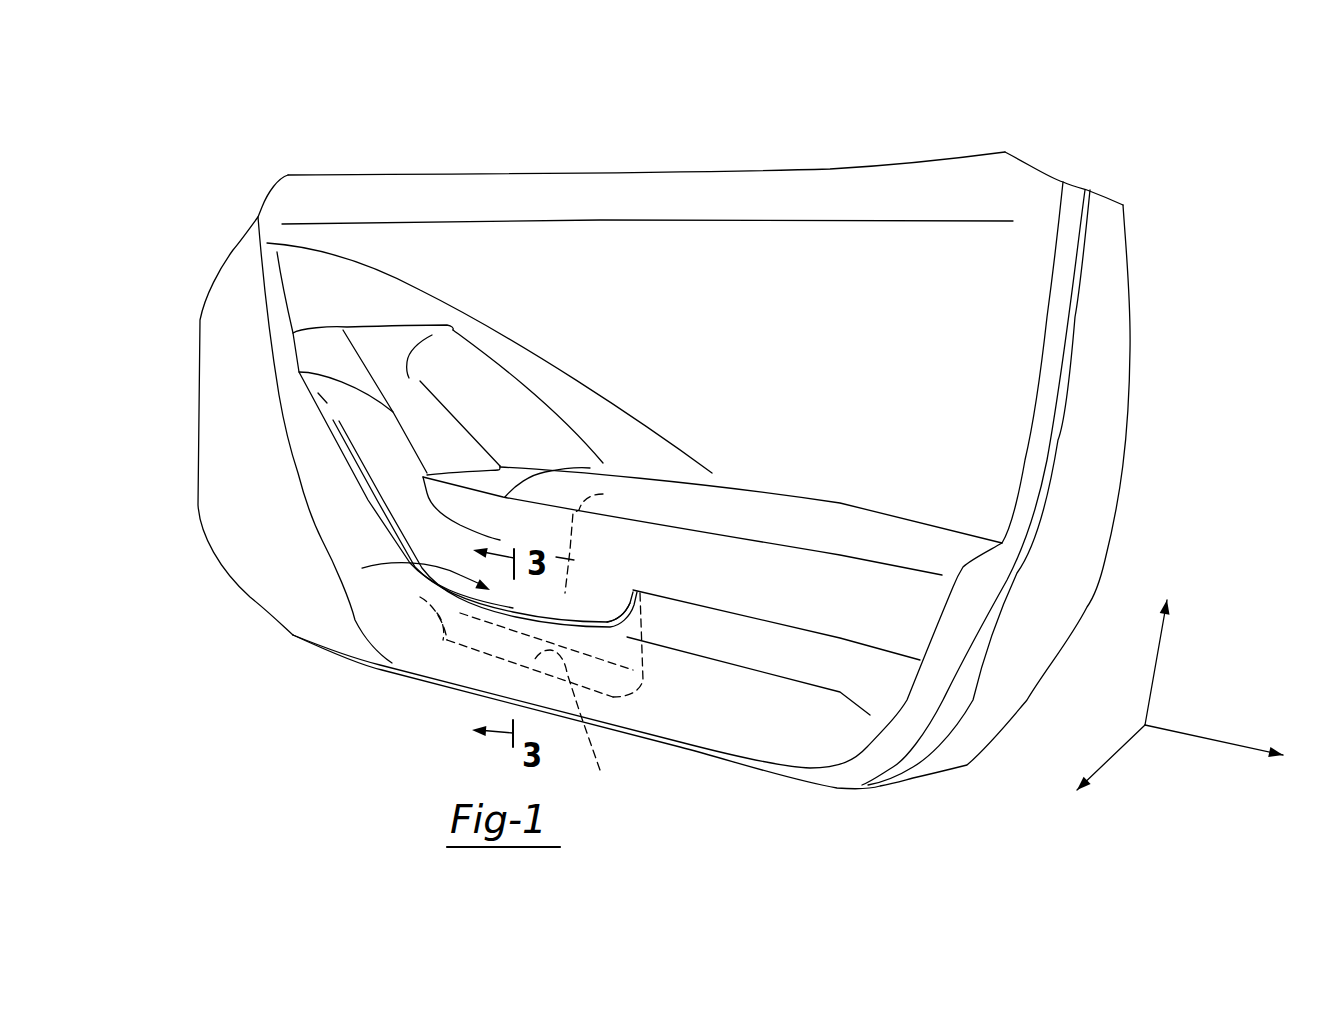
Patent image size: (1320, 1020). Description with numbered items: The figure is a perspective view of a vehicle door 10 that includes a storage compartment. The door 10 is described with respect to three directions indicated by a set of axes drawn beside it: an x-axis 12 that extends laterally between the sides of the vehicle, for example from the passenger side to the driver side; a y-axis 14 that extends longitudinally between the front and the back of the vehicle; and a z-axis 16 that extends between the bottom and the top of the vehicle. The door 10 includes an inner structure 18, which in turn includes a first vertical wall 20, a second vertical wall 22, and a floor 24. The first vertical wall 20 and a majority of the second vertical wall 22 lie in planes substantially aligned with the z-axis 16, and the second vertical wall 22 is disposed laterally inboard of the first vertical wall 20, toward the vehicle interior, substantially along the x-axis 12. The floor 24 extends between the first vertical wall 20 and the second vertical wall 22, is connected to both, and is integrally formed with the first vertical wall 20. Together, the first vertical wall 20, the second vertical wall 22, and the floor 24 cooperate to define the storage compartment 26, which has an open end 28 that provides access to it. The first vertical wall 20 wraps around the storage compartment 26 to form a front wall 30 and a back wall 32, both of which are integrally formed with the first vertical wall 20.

The door 10 is at (178, 167).
The x-axis 12 is at (1112, 755).
The y-axis 14 is at (1212, 737).
The z-axis 16 is at (1162, 642).
The inner structure 18 is at (665, 267).
The first vertical wall 20 is at (607, 597).
The second vertical wall 22 is at (510, 648).
The floor 24 is at (600, 770).
The storage compartment 26 is at (595, 538).
The open end 28 is at (415, 574).
The front wall 30 is at (447, 640).
The back wall 32 is at (640, 634).